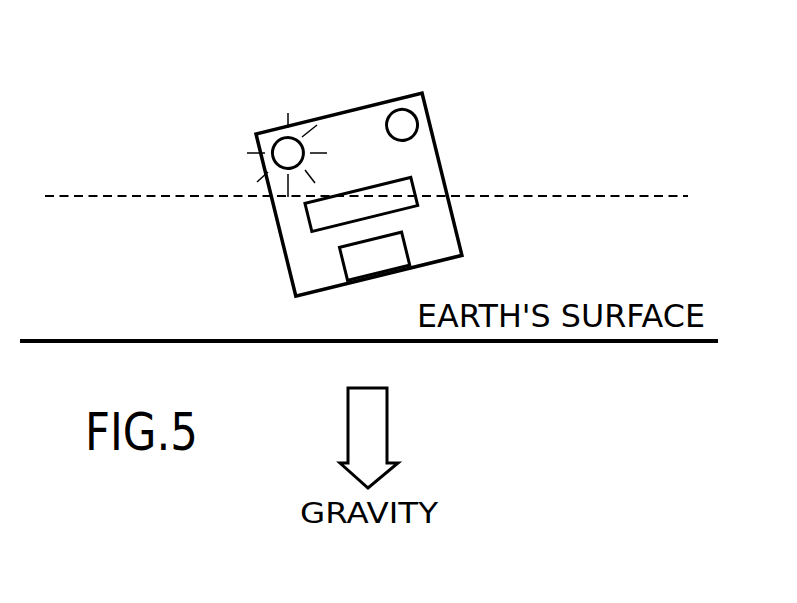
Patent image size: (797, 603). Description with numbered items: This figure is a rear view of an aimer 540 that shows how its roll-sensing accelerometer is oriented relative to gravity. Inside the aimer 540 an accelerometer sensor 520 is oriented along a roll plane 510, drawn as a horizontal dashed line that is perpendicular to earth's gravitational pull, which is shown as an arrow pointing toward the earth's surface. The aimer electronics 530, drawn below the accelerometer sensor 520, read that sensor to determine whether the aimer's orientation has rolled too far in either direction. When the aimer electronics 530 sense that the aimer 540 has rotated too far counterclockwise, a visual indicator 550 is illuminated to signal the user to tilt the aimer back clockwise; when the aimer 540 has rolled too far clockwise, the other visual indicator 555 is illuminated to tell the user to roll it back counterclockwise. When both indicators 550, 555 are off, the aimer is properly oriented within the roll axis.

The roll plane 510 is at (620, 195).
The accelerometer sensor 520 is at (305, 219).
The aimer electronics 530 is at (340, 263).
The aimer 540 is at (352, 108).
The visual indicator 550 is at (263, 133).
The visual indicator 555 is at (427, 118).